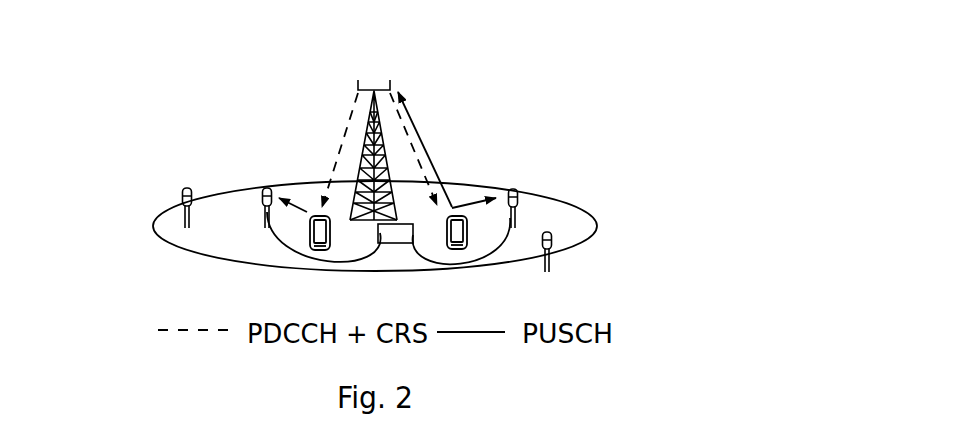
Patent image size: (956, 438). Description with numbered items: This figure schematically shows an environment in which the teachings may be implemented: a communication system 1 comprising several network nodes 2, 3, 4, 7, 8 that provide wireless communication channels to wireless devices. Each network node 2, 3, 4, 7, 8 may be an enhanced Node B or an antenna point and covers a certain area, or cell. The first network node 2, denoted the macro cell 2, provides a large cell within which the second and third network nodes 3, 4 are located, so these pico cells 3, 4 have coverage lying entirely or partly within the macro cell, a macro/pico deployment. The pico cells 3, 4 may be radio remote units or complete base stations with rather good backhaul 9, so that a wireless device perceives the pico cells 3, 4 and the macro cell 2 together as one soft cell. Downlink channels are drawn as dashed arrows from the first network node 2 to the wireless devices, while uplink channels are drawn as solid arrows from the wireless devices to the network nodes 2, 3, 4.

The communication system 1 is at (615, 148).
The first network node 2 is at (406, 243).
The second network node 3 is at (262, 196).
The third network node 4 is at (515, 190).
The network node 7 is at (183, 193).
The network node 8 is at (552, 236).
The backhaul 9 is at (296, 257).